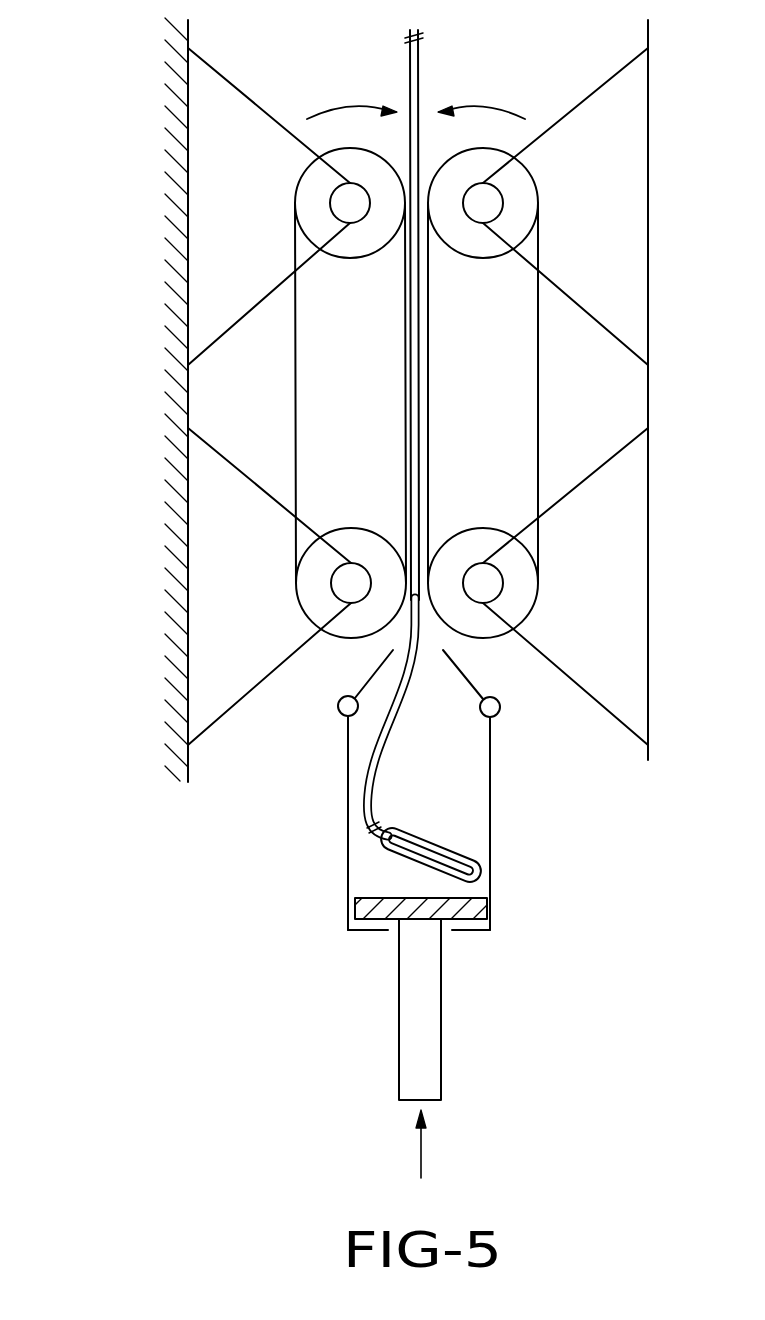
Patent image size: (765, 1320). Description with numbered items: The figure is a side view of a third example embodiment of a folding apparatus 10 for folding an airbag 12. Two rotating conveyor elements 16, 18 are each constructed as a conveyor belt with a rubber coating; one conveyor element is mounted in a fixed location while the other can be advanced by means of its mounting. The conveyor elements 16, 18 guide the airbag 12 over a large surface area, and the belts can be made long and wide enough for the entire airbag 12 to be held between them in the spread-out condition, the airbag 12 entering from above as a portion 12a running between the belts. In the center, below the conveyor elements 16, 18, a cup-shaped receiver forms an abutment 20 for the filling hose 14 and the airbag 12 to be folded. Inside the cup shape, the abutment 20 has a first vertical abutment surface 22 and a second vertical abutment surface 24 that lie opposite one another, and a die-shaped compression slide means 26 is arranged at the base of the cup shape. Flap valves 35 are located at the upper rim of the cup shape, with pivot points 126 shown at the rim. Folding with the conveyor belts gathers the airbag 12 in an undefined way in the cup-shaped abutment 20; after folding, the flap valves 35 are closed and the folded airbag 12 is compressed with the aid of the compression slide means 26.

The folding apparatus 10 is at (97, 165).
The airbag 12 is at (421, 71).
The wire portion 12a is at (418, 360).
The filling hose 14 is at (460, 870).
The first rotating conveyor element 16 is at (296, 428).
The second rotating conveyor element 18 is at (538, 403).
The abutment 20 is at (349, 887).
The first vertical abutment surface 22 is at (352, 862).
The second vertical abutment surface 24 is at (490, 826).
The compression slide means 26 is at (441, 1018).
The flap valves 35 is at (467, 678).
The guide pin 126 is at (385, 731).